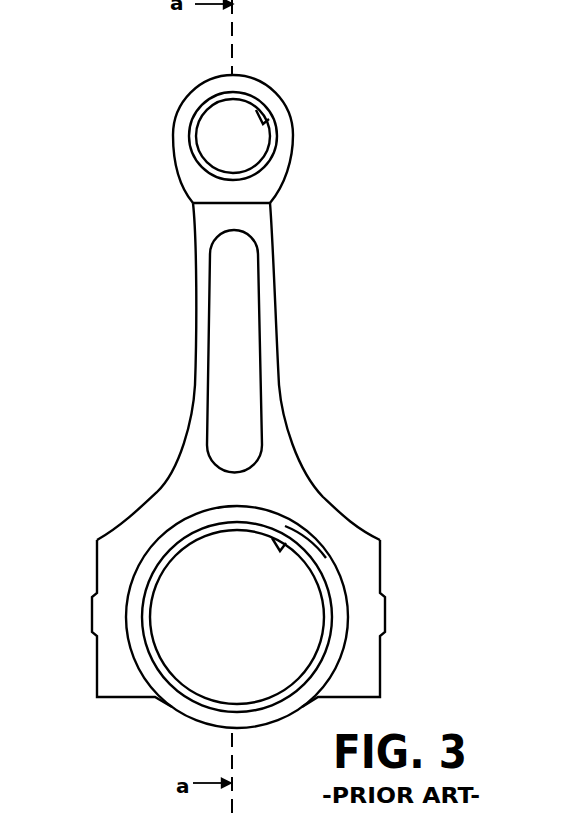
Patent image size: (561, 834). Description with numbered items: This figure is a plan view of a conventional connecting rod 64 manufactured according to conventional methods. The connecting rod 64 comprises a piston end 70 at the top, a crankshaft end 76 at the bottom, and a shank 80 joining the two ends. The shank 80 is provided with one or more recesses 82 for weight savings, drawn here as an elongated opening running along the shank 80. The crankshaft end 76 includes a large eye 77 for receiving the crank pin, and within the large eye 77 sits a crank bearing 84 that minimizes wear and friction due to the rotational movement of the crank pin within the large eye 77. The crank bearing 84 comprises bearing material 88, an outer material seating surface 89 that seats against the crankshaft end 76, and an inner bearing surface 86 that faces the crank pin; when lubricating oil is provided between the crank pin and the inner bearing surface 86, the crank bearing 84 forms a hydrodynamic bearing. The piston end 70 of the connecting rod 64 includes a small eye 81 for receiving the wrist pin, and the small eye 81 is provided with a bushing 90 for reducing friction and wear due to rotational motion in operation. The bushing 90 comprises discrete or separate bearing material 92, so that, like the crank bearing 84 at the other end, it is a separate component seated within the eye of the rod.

The connecting rod 64 is at (173, 360).
The piston end 70 is at (272, 89).
The crankshaft end 76 is at (284, 484).
The large eye 77 is at (208, 588).
The shank 80 is at (263, 297).
The small eye 81 is at (215, 136).
The recess 82 is at (233, 343).
The crank bearing 84 is at (315, 565).
The inner bearing surface 86 is at (288, 549).
The bearing material 88 is at (316, 563).
The outer material seating surface 89 is at (188, 533).
The bushing 90 is at (268, 158).
The bearing material 92 is at (266, 125).